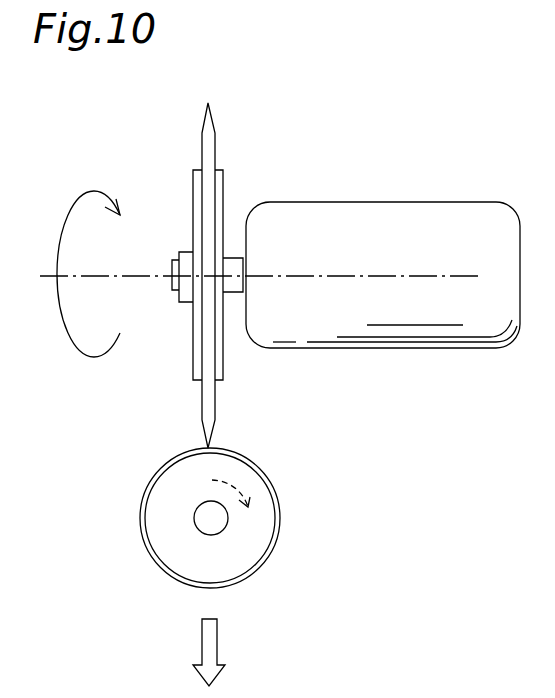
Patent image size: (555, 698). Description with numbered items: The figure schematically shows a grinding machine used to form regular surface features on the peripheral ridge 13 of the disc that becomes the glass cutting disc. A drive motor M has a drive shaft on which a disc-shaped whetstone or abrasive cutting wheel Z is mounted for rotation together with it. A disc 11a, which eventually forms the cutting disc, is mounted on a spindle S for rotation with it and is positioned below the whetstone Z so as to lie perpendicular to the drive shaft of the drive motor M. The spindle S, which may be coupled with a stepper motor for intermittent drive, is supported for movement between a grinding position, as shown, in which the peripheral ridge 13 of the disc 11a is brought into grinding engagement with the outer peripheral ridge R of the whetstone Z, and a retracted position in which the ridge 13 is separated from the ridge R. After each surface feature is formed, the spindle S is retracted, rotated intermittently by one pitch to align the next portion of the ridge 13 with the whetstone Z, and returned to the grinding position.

The outer peripheral ridge R is at (245, 254).
The disc-shaped whetstone Z is at (208, 145).
The drive motor M is at (430, 220).
The peripheral ridge 13 is at (265, 473).
The disc 11a is at (280, 530).
The spindle S is at (202, 520).